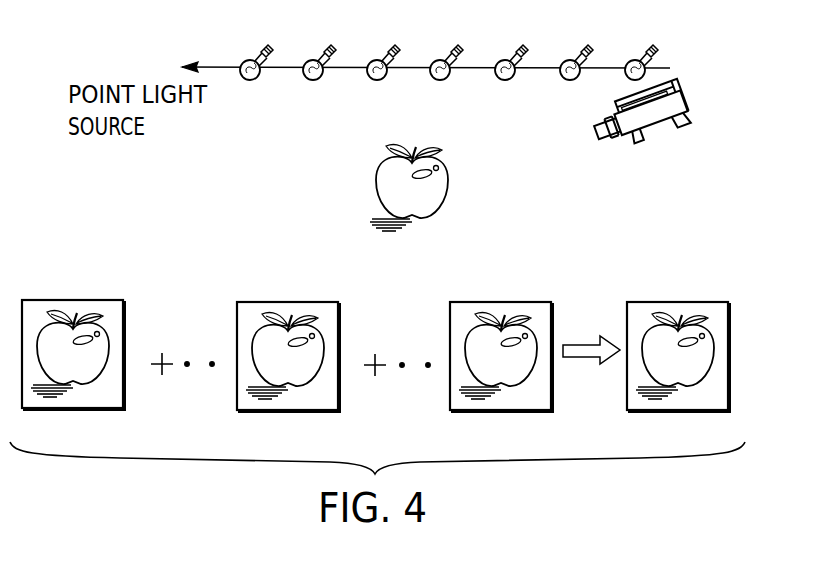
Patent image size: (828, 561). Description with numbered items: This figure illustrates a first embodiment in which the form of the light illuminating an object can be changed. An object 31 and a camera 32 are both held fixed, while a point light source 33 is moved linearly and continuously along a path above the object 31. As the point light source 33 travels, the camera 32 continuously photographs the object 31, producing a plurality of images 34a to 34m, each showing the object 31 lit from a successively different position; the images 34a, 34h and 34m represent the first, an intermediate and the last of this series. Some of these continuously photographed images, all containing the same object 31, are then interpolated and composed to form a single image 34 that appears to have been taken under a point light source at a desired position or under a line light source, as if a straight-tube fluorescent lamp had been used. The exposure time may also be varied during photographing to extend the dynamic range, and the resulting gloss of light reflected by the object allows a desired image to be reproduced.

The object 31 is at (447, 163).
The camera 32 is at (670, 82).
The point light source 33 is at (457, 52).
The image 34a is at (78, 300).
The image 34h is at (293, 302).
The image 34m is at (507, 302).
The composed image 34 is at (682, 302).